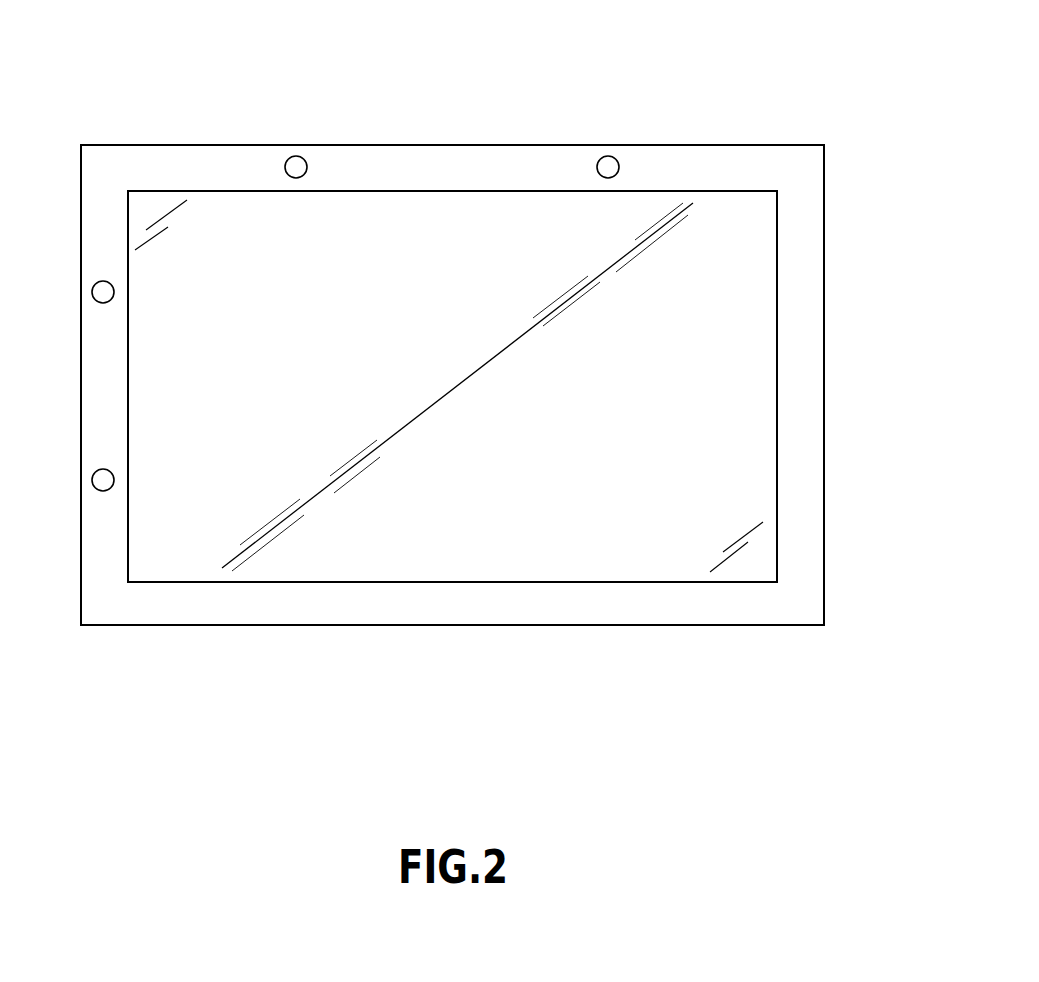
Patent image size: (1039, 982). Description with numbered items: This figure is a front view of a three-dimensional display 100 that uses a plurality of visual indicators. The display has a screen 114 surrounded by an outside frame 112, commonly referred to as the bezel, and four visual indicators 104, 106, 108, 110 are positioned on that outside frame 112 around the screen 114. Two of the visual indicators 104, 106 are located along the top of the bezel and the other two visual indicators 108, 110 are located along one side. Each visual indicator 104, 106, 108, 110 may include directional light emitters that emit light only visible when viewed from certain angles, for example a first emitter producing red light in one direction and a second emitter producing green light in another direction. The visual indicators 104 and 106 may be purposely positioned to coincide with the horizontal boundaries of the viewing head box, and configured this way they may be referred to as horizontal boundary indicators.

The 3D display 100 is at (868, 96).
The visual indicator 104 is at (297, 156).
The visual indicator 106 is at (609, 156).
The visual indicator 108 is at (92, 292).
The visual indicator 110 is at (92, 480).
The outside frame 112 is at (805, 540).
The screen 114 is at (738, 393).